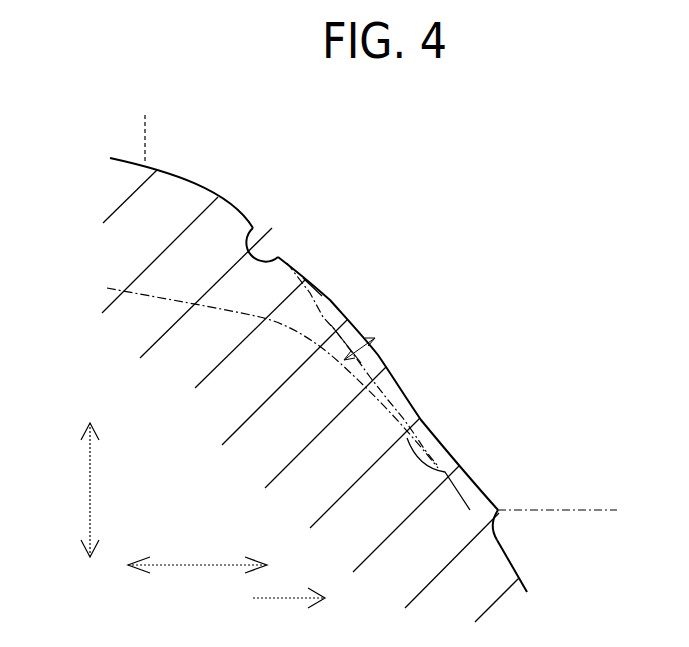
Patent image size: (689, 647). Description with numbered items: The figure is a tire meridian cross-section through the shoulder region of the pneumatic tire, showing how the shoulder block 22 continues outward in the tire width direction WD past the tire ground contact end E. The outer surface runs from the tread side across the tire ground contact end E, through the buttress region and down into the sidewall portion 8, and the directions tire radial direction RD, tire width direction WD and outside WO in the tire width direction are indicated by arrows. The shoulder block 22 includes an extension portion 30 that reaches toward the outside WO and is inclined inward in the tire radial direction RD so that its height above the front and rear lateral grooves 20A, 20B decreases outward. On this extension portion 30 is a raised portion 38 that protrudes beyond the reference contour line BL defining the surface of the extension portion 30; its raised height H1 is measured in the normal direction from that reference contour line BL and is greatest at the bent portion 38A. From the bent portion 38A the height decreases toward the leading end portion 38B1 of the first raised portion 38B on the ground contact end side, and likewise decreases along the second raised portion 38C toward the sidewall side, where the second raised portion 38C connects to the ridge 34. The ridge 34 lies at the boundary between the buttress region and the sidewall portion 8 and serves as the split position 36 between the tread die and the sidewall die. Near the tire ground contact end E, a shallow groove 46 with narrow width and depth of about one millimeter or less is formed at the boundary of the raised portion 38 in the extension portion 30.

The sidewall portion 8 is at (519, 573).
The shoulder block 22 is at (184, 179).
The shallow groove 46 is at (265, 241).
The raised portion 38 is at (388, 370).
The bent portion 38A is at (380, 345).
The first raised portion 38B is at (332, 305).
The leading end portion 38B1 is at (288, 256).
The second raised portion 38C is at (415, 403).
The extension portion 30 is at (426, 441).
The ridge 34 is at (485, 493).
The split position 36 is at (555, 512).
The first lateral groove 20A is at (234, 375).
The second lateral groove 20B is at (182, 297).
The reference contour line BL is at (314, 306).
The raised height H1 is at (376, 337).
The tire ground contact end E is at (147, 133).
The tire radial direction RD is at (77, 490).
The tire width direction WD is at (197, 576).
The outside in the tire width direction WO is at (289, 609).